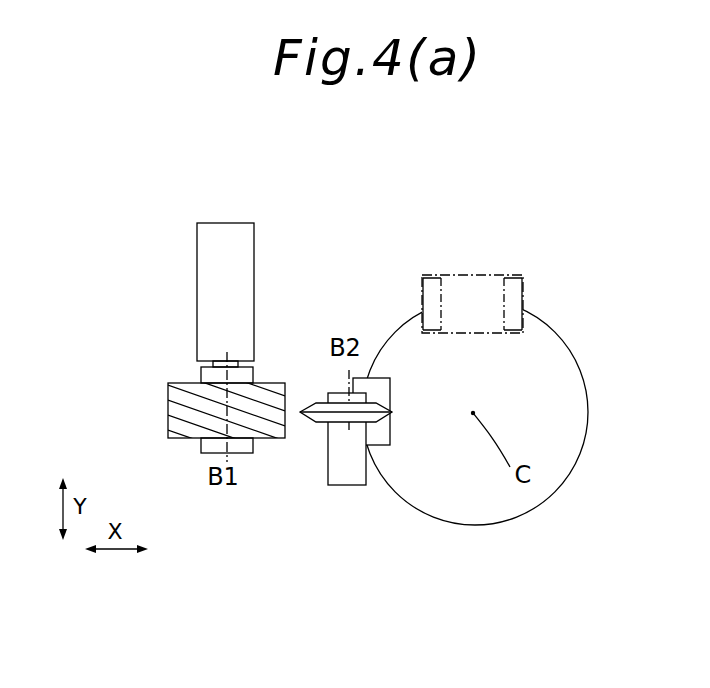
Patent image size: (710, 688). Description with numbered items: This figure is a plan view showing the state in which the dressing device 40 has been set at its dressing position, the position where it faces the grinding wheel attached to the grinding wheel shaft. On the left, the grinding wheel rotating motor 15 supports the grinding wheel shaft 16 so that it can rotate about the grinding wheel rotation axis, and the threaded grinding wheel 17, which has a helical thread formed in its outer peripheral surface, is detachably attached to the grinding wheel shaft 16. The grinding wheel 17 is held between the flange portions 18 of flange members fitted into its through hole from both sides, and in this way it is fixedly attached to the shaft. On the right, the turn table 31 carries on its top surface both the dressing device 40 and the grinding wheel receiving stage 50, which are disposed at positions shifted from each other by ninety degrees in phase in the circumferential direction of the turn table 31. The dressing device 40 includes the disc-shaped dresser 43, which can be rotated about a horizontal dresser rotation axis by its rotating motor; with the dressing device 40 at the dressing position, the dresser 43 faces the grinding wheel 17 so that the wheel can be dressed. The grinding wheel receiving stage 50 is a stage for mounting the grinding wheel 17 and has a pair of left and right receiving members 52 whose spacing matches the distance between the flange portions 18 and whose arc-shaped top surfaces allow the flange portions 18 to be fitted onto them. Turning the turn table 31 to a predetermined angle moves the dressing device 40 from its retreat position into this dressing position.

The grinding wheel rotating motor 15 is at (197, 257).
The grinding wheel shaft 16 is at (255, 362).
The threaded grinding wheel 17 is at (168, 400).
The flange portions 18 is at (200, 372).
The turn table 31 is at (568, 478).
The dressing device 40 is at (330, 492).
The dresser 43 is at (328, 418).
The grinding wheel receiving stage 50 is at (535, 280).
The receiving members 52 is at (434, 272).